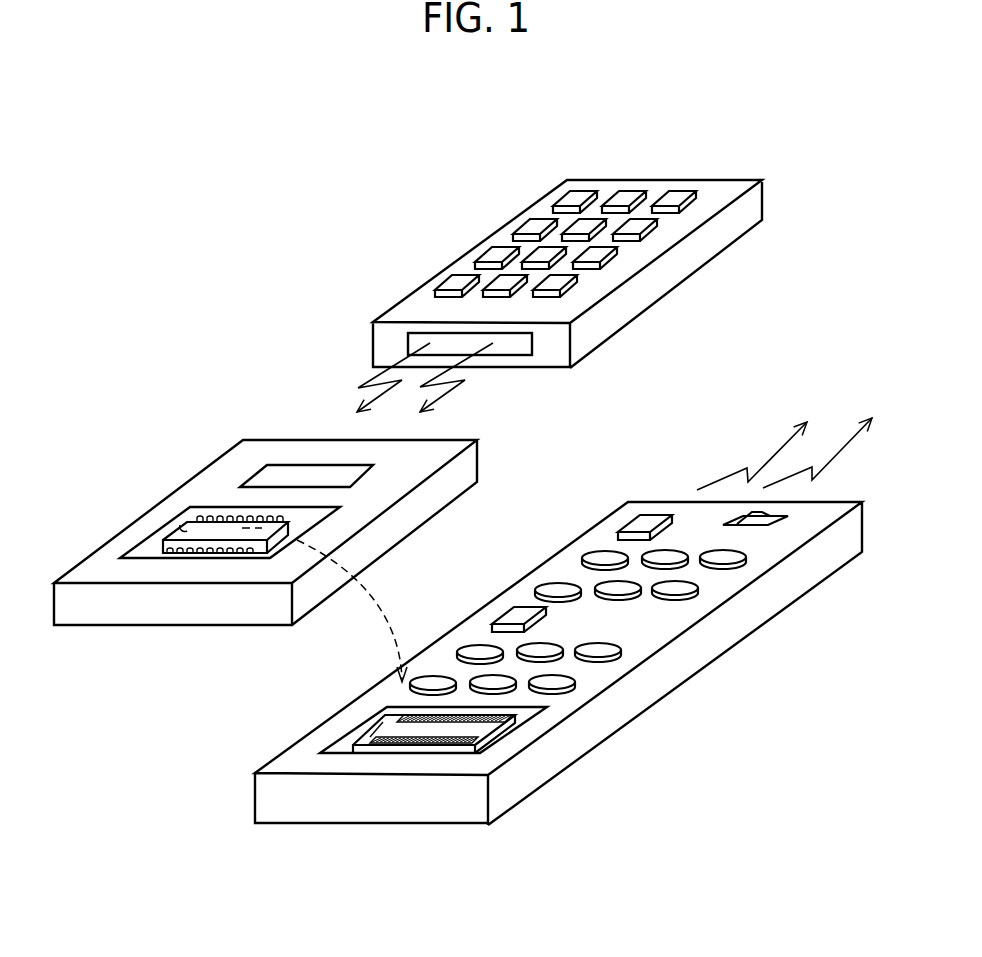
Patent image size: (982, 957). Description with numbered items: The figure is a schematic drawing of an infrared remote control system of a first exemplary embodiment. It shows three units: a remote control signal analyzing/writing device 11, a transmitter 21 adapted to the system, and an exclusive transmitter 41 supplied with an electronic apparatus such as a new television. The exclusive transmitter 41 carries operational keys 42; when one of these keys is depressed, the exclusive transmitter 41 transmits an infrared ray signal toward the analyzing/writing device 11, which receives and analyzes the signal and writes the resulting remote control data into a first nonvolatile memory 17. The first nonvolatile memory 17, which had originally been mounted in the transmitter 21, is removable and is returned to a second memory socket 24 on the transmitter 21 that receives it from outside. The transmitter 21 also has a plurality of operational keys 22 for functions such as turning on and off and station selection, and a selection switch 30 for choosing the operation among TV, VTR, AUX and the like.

The remote control signal analyzing/writing device 11 is at (257, 472).
The first nonvolatile memory 17 is at (217, 530).
The transmitter 21 is at (720, 632).
The operational keys 22 is at (722, 550).
The second memory socket 24 is at (492, 735).
The selection switch 30 is at (718, 515).
The exclusive transmitter 41 is at (715, 192).
The operational keys 42 is at (458, 280).